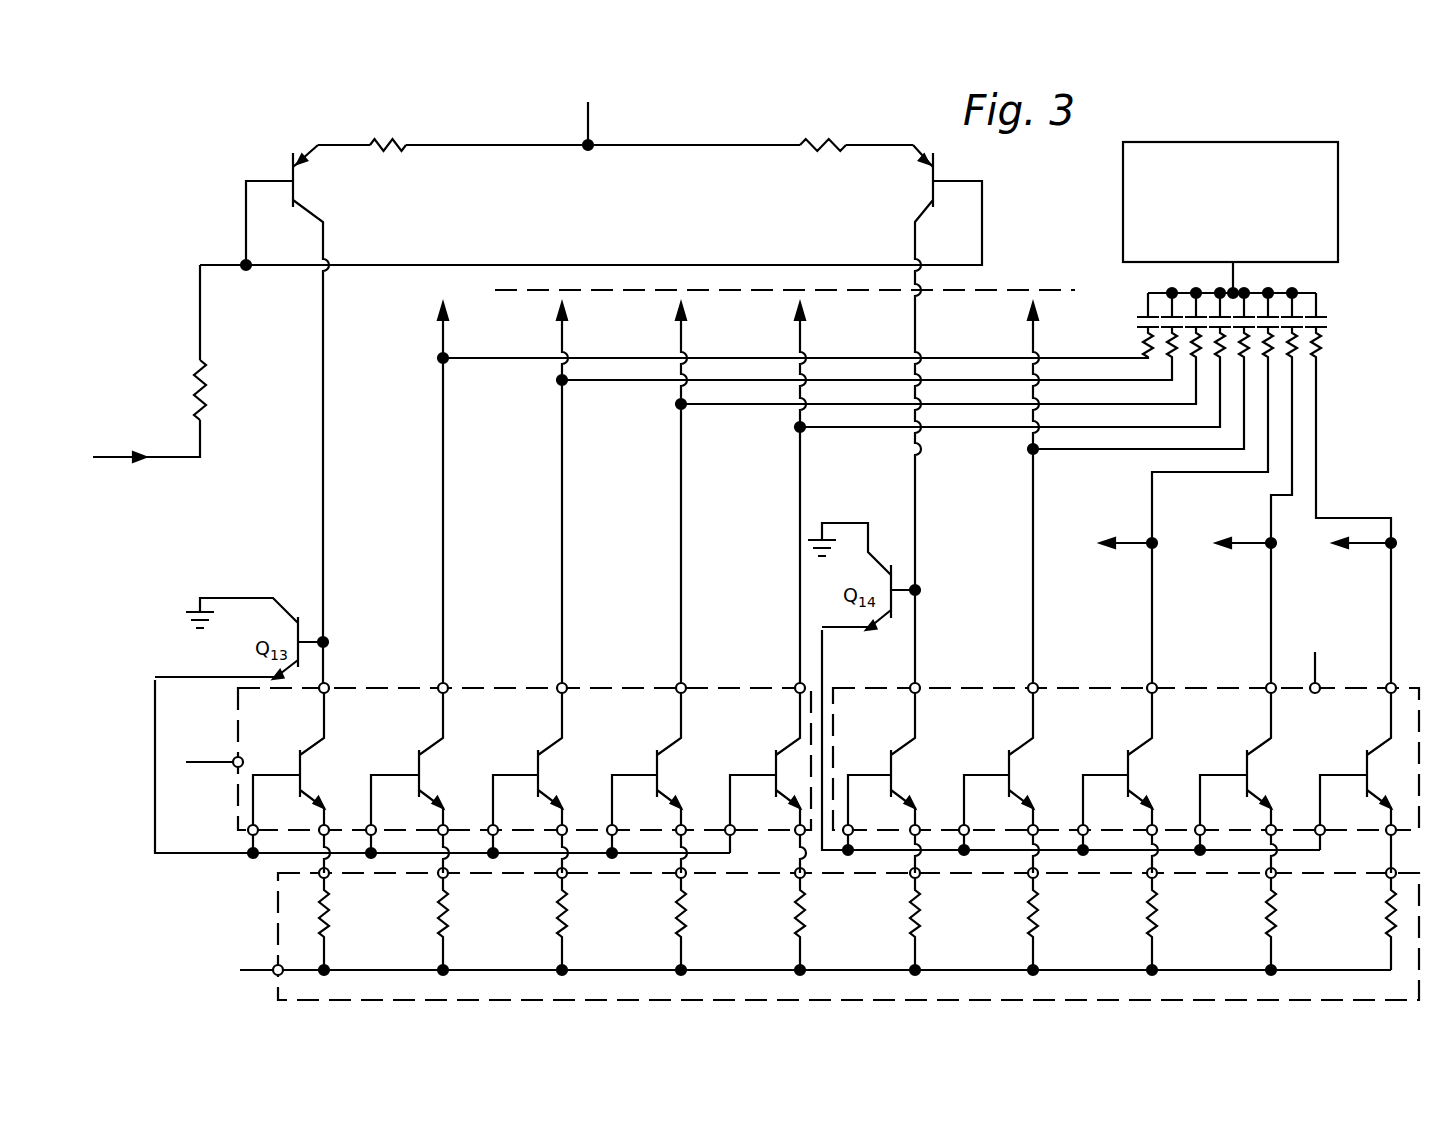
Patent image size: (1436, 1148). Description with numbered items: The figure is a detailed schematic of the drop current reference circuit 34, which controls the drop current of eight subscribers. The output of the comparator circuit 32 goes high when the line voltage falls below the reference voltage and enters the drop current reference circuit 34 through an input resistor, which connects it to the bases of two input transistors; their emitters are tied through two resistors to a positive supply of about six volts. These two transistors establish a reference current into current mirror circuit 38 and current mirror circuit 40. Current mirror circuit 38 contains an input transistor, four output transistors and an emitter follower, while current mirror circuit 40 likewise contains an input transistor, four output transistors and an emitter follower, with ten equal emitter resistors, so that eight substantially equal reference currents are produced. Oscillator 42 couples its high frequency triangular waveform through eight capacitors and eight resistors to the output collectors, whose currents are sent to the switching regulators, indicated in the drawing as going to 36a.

The drop current reference circuit 34 is at (735, 103).
The oscillator 42 is at (1212, 142).
The current mirror circuit 38 is at (368, 688).
The current mirror circuit 40 is at (1078, 688).
The output line to 36a is at (742, 484).
The comparator circuit 32 is at (165, 363).